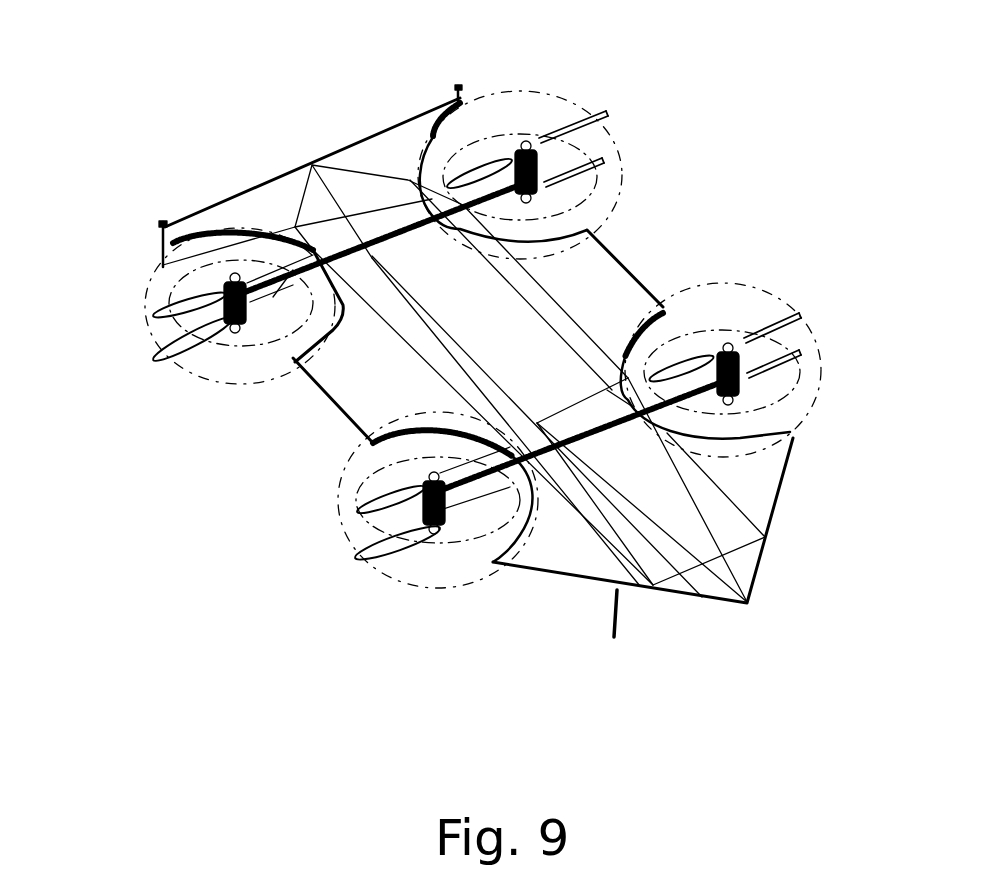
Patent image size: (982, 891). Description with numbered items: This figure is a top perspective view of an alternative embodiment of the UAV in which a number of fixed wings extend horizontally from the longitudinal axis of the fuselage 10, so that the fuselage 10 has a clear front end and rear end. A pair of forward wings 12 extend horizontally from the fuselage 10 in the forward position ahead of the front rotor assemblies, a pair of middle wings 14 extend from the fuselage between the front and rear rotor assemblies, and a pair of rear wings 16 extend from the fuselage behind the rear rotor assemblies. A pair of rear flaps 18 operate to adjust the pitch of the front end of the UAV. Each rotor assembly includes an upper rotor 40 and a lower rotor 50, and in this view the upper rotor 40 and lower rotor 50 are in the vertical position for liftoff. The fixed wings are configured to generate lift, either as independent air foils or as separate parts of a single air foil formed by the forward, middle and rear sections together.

The fuselage 10 is at (648, 490).
The forward wings 12 is at (570, 555).
The middle wings 14 is at (583, 275).
The rear wings 16 is at (381, 155).
The rear flaps 18 is at (178, 250).
The upper rotor 40 is at (350, 517).
The lower rotor 50 is at (360, 557).